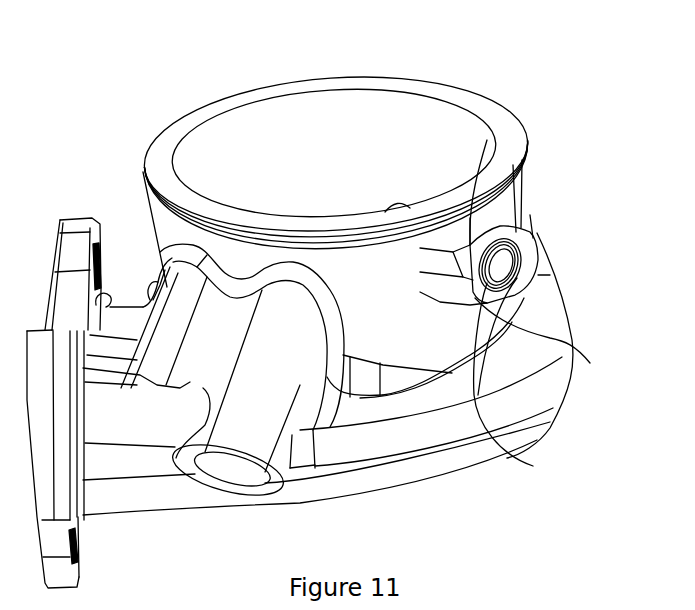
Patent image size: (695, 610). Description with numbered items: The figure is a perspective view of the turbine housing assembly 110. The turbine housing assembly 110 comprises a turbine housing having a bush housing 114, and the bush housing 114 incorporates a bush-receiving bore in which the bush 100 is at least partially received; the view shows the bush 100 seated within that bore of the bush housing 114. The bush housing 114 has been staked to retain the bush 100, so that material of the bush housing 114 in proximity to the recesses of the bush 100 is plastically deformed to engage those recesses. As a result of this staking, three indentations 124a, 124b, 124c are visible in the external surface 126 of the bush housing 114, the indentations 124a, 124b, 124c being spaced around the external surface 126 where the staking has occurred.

The bush 100 is at (527, 310).
The turbine housing assembly 110 is at (495, 91).
The bush housing 114 is at (514, 238).
The indentation 124a is at (590, 363).
The indentation 124b is at (508, 220).
The indentation 124c is at (520, 152).
The external surface 126 is at (522, 377).